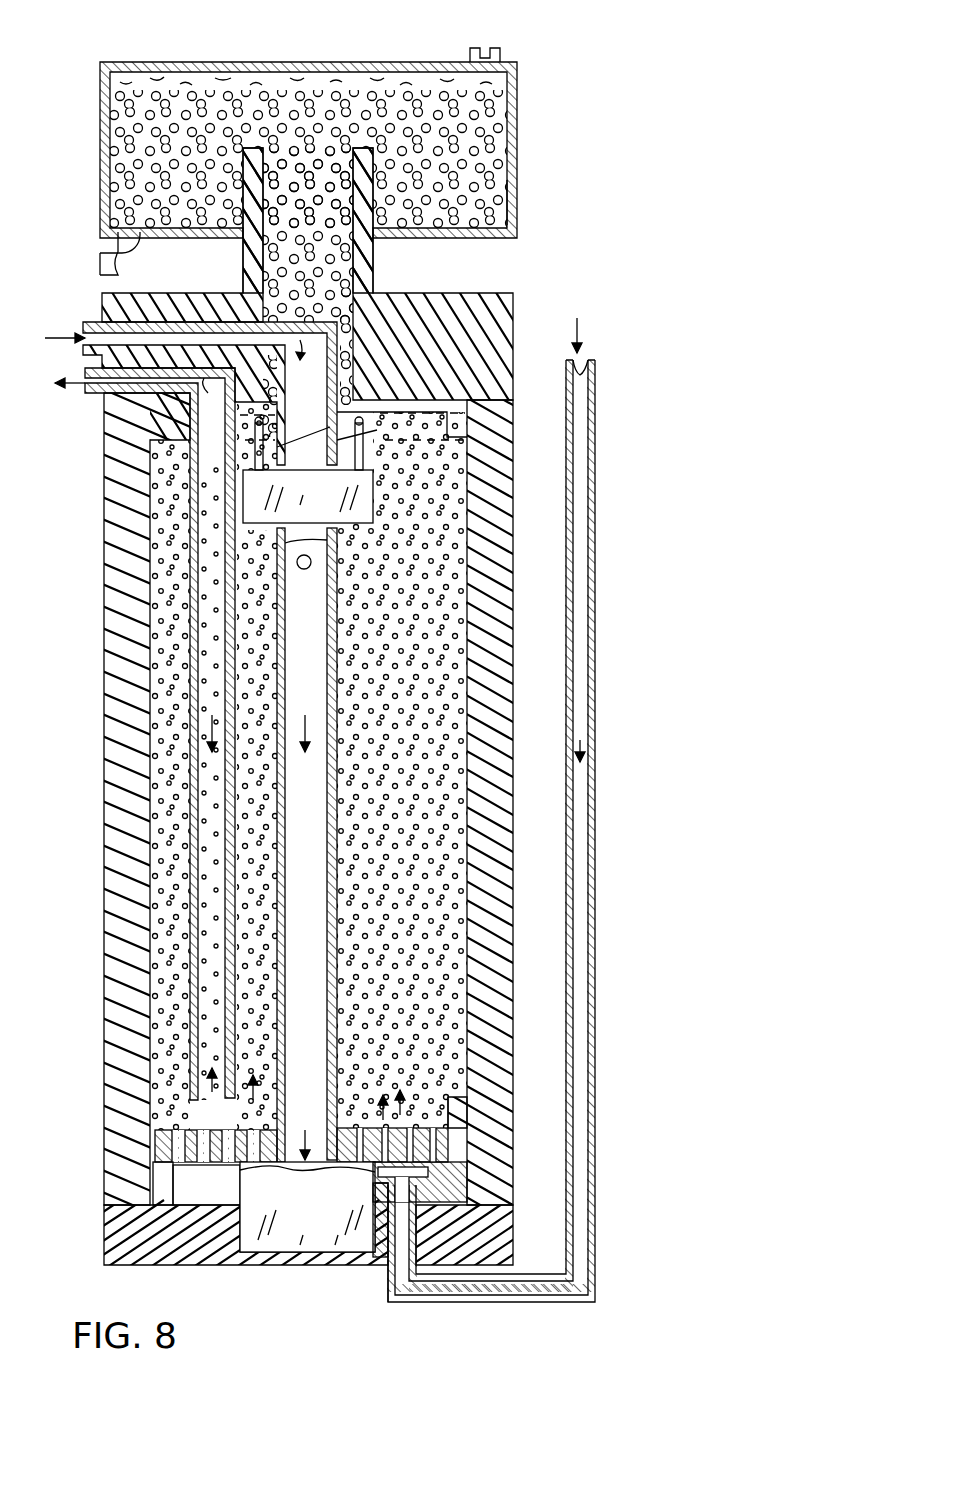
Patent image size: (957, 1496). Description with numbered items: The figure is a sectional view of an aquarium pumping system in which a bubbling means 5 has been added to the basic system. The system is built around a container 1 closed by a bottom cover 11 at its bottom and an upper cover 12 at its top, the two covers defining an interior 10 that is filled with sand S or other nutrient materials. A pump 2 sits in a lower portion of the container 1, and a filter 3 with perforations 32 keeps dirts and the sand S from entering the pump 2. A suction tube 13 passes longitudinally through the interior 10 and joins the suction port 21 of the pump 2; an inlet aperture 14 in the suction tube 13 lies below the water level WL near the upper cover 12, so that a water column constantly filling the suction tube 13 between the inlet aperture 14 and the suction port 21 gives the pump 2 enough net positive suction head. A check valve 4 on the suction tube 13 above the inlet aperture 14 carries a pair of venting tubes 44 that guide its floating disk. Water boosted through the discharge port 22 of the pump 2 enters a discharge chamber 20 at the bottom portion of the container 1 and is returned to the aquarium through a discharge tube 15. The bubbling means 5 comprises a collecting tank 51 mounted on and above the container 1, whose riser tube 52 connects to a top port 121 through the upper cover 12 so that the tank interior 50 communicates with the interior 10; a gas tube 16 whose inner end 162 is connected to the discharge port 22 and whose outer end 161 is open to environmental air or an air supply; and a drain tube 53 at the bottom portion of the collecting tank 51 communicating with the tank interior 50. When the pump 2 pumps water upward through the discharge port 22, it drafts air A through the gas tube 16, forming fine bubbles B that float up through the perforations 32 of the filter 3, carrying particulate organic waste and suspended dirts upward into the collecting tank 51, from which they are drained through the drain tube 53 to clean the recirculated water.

The container 1 is at (105, 780).
The pump 2 is at (290, 1222).
The filter 3 is at (195, 1142).
The check valve 4 is at (377, 467).
The bubbling means 5 is at (522, 139).
The interior 10 is at (460, 543).
The bottom cover 11 is at (122, 1250).
The upper cover 12 is at (497, 293).
The suction tube 13 is at (90, 322).
The inlet aperture 14 is at (297, 567).
The discharge tube 15 is at (87, 397).
The gas tube 16 is at (538, 1272).
The discharge chamber 20 is at (440, 1178).
The suction port 21 is at (160, 1178).
The discharge port 22 is at (377, 1255).
The perforations 32 is at (437, 1127).
The venting tubes 44 is at (365, 422).
The tank interior 50 is at (252, 105).
The collecting tank 51 is at (520, 210).
The riser tube 52 is at (355, 288).
The drain tube 53 is at (125, 262).
The top port 121 is at (352, 322).
The outer end 161 is at (592, 385).
The inner end 162 is at (380, 1270).
The air A is at (580, 338).
The fine bubbles B is at (447, 112).
The sand S is at (455, 612).
The water level WL is at (385, 412).